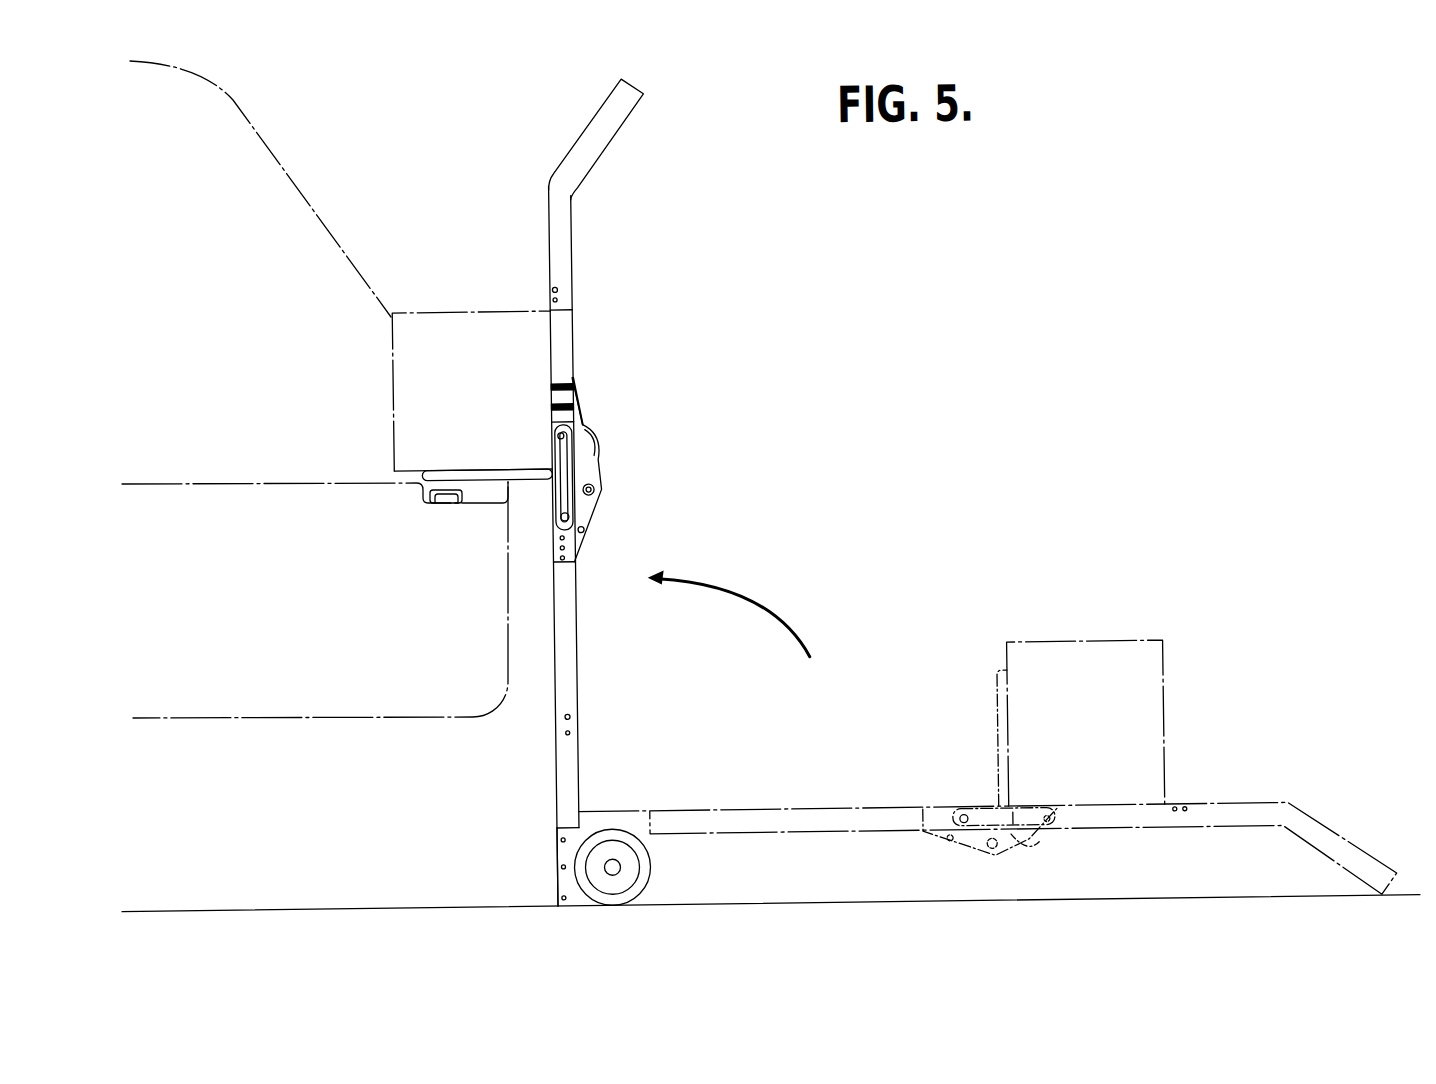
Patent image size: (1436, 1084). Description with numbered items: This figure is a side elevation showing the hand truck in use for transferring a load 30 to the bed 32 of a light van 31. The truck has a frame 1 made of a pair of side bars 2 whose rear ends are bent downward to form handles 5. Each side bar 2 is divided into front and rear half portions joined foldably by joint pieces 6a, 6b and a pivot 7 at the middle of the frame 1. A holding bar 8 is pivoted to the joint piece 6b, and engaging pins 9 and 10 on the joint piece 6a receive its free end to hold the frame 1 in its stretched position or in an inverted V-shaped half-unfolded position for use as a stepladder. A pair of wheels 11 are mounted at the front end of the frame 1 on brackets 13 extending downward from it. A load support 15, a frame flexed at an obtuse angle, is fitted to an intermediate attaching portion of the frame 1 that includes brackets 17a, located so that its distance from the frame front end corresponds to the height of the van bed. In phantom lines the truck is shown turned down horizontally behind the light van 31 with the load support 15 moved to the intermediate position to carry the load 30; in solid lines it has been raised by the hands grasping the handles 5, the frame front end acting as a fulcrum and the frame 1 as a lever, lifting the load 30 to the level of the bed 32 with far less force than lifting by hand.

The frame 1 is at (953, 487).
The side bar 2 is at (579, 248).
The handle 5 is at (612, 111).
The joint piece 6a is at (587, 552).
The joint piece 6b is at (588, 437).
The pivot 7 is at (601, 488).
The holding bar 8 is at (576, 465).
The engaging pin 9 is at (574, 518).
The engaging pin 10 is at (589, 530).
The wheel 11 is at (652, 878).
The bracket 13 is at (557, 845).
The load support 15 is at (439, 470).
The bracket 17a is at (595, 398).
The load 30 is at (450, 312).
The light van 31 is at (333, 228).
The bed 32 is at (266, 480).